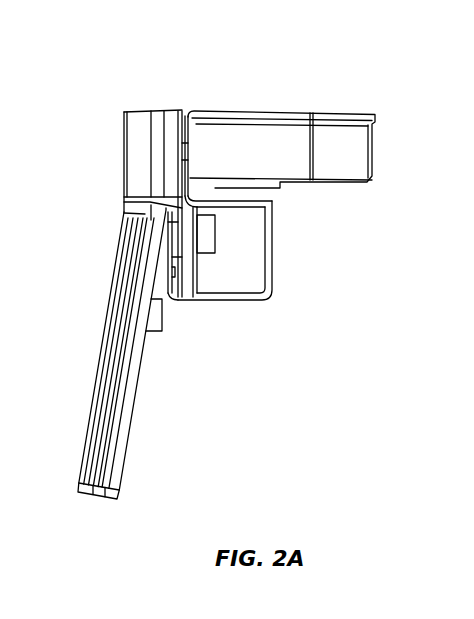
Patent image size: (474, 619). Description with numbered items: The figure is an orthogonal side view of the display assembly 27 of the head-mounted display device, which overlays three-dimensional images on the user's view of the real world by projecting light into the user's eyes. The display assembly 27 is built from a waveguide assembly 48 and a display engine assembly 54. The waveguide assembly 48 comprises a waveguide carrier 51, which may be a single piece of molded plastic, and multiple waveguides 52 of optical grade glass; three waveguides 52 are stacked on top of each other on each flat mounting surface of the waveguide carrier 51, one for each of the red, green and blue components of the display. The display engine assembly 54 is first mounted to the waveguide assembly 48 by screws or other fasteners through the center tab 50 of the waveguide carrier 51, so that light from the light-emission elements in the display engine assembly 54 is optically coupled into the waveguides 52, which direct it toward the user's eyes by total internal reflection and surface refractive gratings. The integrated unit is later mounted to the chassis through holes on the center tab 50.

The display assembly 27 is at (398, 38).
The waveguide assembly 48 is at (162, 382).
The center tab 50 is at (123, 172).
The waveguide carrier 51 is at (122, 472).
The waveguides 52 is at (105, 385).
The display engine assembly 54 is at (273, 248).